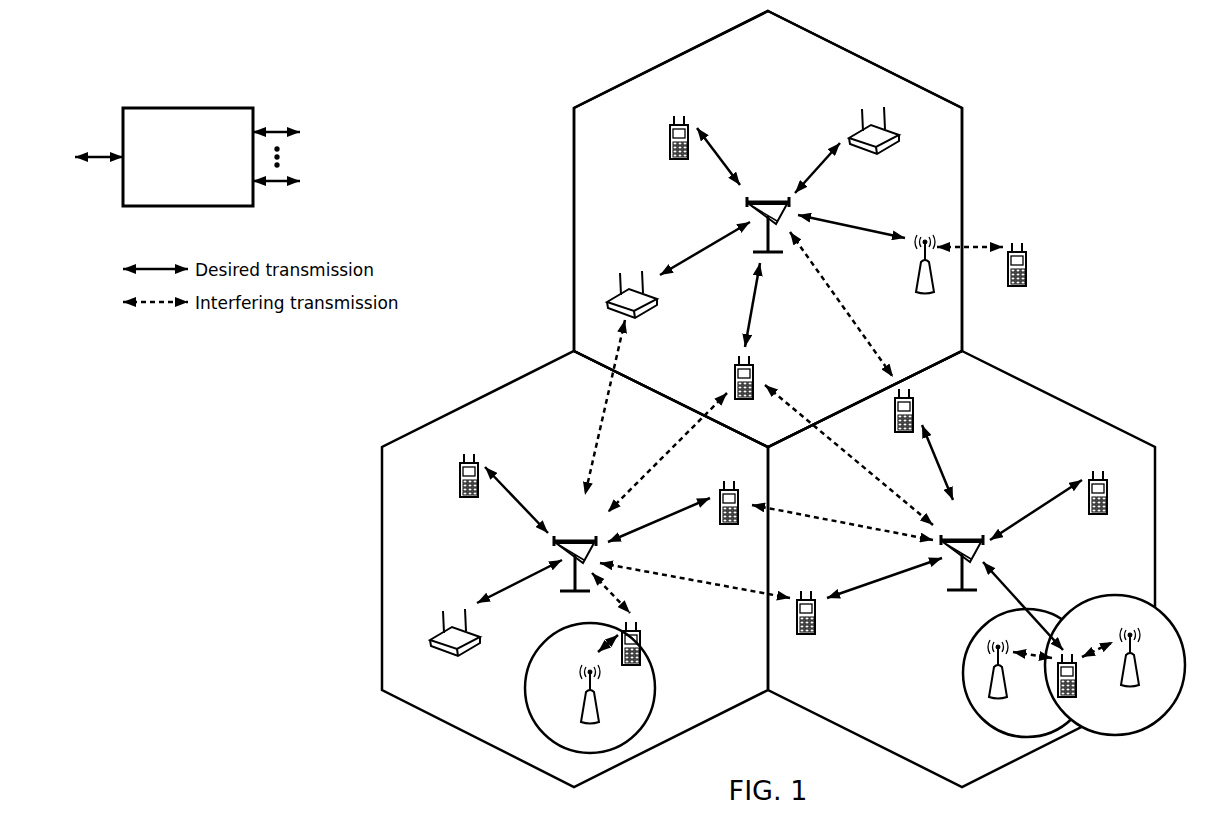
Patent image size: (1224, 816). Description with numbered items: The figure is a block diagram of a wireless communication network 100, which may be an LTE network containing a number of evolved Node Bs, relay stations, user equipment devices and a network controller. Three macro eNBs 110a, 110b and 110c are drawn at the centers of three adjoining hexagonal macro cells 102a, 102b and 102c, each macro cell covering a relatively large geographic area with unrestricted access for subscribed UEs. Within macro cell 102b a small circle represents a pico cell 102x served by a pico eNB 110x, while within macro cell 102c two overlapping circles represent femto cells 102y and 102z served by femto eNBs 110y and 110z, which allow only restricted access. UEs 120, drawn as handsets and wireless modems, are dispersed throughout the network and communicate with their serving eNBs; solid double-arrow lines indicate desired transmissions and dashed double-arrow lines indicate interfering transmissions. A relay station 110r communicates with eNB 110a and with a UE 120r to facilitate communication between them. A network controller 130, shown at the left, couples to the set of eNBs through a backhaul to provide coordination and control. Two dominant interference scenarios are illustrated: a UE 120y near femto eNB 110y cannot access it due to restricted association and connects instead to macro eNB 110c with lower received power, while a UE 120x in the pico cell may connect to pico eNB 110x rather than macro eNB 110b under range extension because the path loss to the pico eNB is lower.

The wireless communication network 100 is at (1092, 72).
The macro cell 102a is at (866, 60).
The macro cell 102b is at (479, 400).
The macro cell 102c is at (1060, 401).
The pico cell 102x is at (545, 644).
The femto cell 102y is at (965, 640).
The femto cell 102z is at (1111, 595).
The macro eNB 110a is at (760, 202).
The macro eNB 110b is at (568, 541).
The macro eNB 110c is at (956, 540).
The relay station 110r is at (917, 283).
The pico eNB 110x is at (598, 714).
The femto eNB 110y is at (1006, 690).
The femto eNB 110z is at (1138, 677).
The user equipment 120 is at (670, 133).
The UE 120r is at (1027, 276).
The UE 120x is at (640, 640).
The UE 120y is at (1058, 692).
The network controller 130 is at (184, 108).